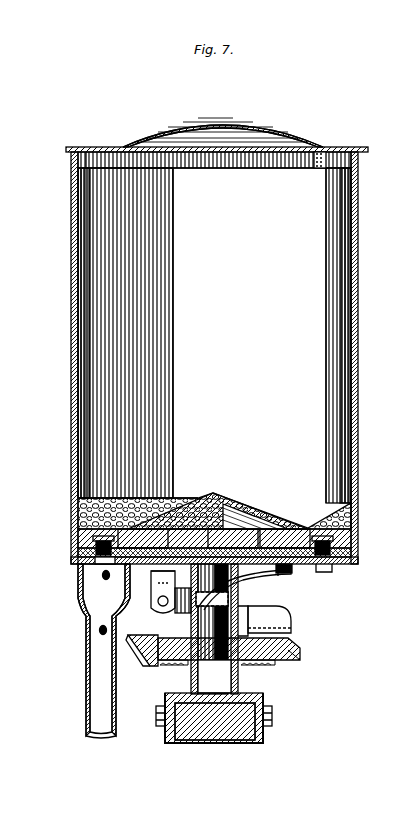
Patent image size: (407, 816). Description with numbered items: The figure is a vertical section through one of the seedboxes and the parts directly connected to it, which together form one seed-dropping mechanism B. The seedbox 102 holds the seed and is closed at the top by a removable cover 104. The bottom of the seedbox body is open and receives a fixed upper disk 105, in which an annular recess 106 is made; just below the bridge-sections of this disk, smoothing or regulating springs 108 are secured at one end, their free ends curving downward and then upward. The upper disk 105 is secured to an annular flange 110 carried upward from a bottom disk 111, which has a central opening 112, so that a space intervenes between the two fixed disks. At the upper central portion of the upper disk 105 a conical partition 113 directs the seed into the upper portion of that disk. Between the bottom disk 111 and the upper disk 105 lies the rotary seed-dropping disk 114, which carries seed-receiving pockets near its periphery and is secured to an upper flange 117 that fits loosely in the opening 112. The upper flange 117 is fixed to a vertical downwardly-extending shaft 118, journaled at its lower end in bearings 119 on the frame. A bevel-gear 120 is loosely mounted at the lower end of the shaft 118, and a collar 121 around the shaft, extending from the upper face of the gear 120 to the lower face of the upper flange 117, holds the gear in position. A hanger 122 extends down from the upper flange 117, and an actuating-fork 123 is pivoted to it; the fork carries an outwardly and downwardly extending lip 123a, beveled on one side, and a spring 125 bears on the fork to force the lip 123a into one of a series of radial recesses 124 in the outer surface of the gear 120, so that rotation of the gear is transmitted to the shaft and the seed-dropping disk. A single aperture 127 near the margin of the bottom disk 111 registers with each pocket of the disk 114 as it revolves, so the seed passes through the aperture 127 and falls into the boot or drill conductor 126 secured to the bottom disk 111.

The seed-dropping mechanism B is at (353, 358).
The seedbox 102 is at (214, 327).
The removable cover 104 is at (304, 140).
The upper disk 105 is at (172, 521).
The annular recess 106 is at (214, 539).
The smoothing or regulating springs 108 is at (66, 553).
The annular flange 110 is at (70, 538).
The bottom disk 111 is at (318, 557).
The central opening 112 is at (280, 560).
The conical partition 113 is at (223, 492).
The rotary seed-dropping disk 114 is at (233, 539).
The upper flange 117 is at (193, 555).
The vertical downwardly-extending shaft 118 is at (214, 629).
The bearings 119 is at (252, 695).
The bevel-gear 120 is at (292, 638).
The collar 121 is at (232, 586).
The hanger 122 is at (150, 600).
The actuating-fork 123 is at (178, 604).
The lip 123a is at (278, 608).
The radial recesses 124 is at (120, 650).
The spring 125 is at (212, 592).
The boot or drill conductor 126 is at (73, 632).
The aperture 127 is at (72, 570).